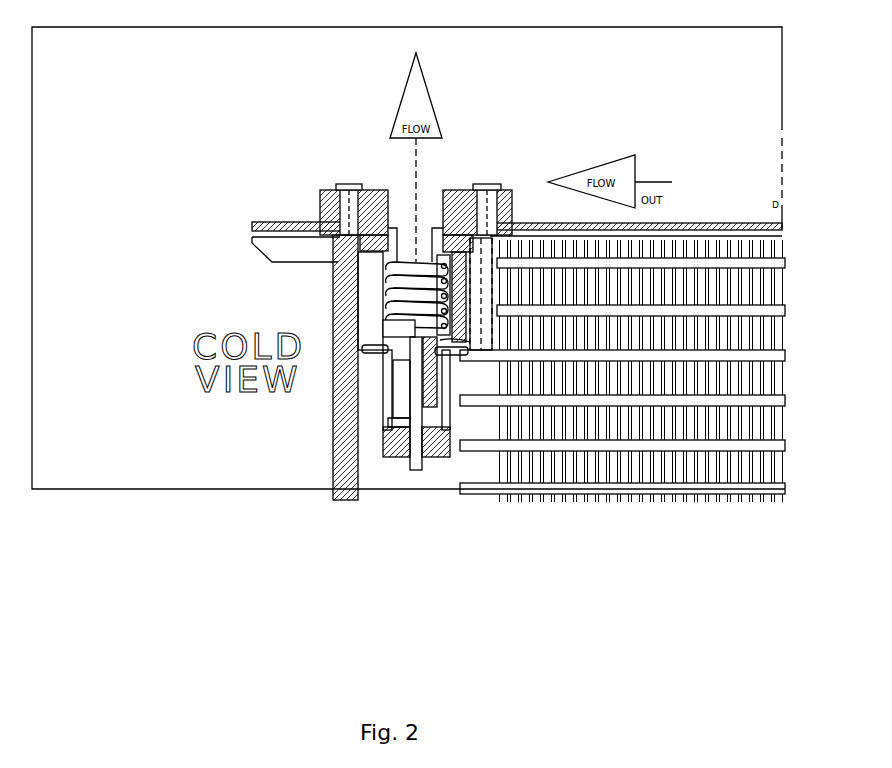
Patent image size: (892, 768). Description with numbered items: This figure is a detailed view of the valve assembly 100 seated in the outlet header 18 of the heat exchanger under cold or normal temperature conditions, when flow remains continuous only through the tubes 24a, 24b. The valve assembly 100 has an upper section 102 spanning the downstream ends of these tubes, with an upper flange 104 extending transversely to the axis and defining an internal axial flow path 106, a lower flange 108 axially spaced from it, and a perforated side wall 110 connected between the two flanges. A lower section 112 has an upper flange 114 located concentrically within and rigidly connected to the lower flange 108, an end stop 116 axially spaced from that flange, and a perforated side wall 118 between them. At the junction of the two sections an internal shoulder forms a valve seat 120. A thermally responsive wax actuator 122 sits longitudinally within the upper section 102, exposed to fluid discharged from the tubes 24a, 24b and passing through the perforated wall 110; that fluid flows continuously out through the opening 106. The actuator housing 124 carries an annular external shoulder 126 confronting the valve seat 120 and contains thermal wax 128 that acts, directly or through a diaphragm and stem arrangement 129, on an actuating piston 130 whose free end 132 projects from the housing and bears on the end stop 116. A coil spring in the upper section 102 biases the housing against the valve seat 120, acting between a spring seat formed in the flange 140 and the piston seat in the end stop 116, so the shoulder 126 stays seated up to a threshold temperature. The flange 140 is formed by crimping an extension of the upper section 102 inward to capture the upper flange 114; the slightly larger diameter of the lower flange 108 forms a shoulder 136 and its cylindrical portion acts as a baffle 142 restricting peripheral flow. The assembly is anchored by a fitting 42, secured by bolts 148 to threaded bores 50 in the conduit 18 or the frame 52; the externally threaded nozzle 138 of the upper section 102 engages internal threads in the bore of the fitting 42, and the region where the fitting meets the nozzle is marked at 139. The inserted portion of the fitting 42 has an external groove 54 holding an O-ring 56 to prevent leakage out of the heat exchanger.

The outlet header 18 is at (333, 467).
The continuous flow tube 24a is at (661, 262).
The continuous flow tube 24b is at (700, 310).
The fitting 42 is at (335, 190).
The threaded bore 50 is at (343, 229).
The frame 52 is at (547, 182).
The external groove 54 is at (248, 232).
The O-ring 56 is at (318, 246).
The valve assembly 100 is at (370, 410).
The upper section 102 is at (360, 298).
The upper flange 104 is at (372, 264).
The internal axial flow path 106 is at (430, 240).
The lower flange 108 is at (358, 362).
The perforated side wall 110 is at (492, 233).
The lower section 112 is at (372, 421).
The upper flange 114 is at (370, 340).
The end stop 116 is at (363, 470).
The perforated side wall 118 is at (447, 418).
The valve seat 120 is at (362, 348).
The wax actuator 122 is at (443, 330).
The housing 124 is at (460, 285).
The annular external shoulder 126 is at (458, 344).
The thermal wax 128 is at (425, 312).
The diaphragm and stem arrangement 129 is at (470, 352).
The actuating piston 130 is at (413, 403).
The free end 132 is at (416, 470).
The shoulder 136 is at (368, 347).
The nozzle 138 is at (440, 258).
The bolt base 139 is at (355, 220).
The flange 140 is at (357, 362).
The baffle 142 is at (380, 352).
The bolt 148 is at (352, 185).